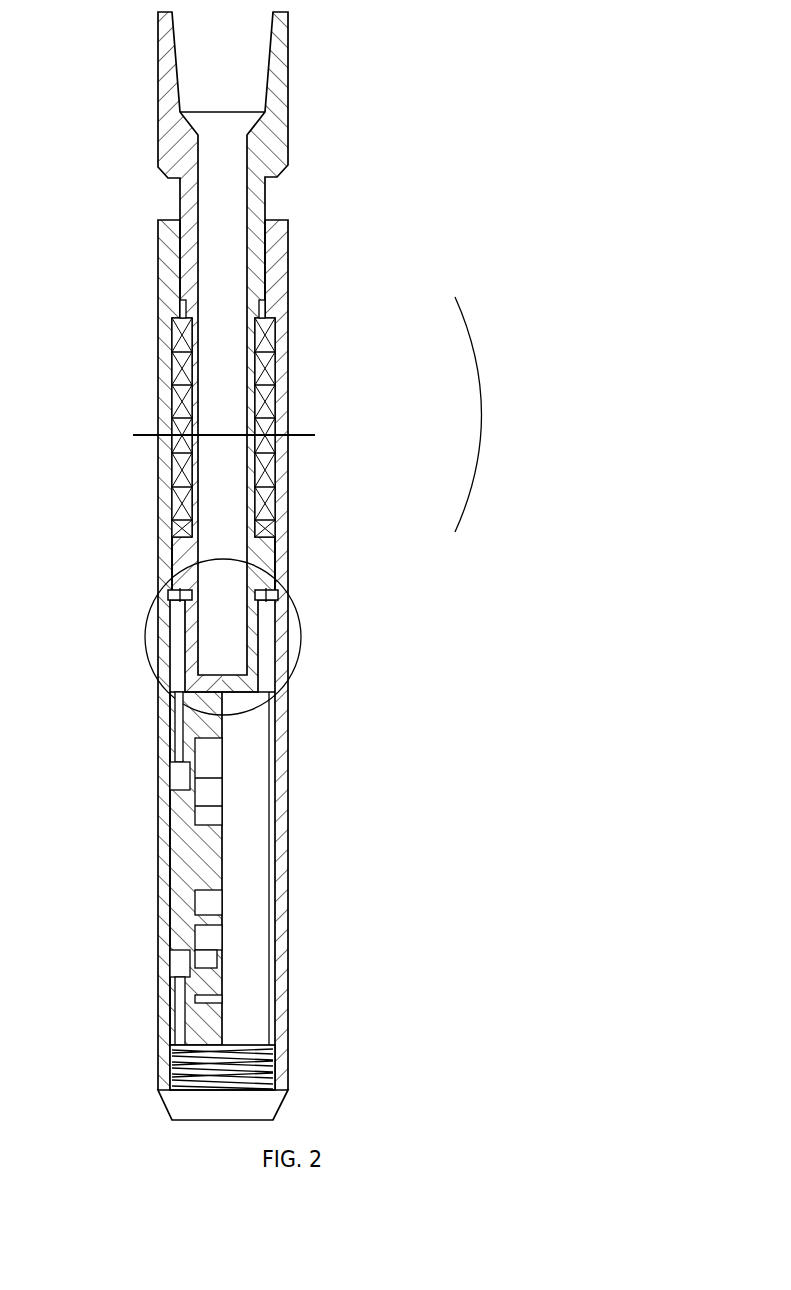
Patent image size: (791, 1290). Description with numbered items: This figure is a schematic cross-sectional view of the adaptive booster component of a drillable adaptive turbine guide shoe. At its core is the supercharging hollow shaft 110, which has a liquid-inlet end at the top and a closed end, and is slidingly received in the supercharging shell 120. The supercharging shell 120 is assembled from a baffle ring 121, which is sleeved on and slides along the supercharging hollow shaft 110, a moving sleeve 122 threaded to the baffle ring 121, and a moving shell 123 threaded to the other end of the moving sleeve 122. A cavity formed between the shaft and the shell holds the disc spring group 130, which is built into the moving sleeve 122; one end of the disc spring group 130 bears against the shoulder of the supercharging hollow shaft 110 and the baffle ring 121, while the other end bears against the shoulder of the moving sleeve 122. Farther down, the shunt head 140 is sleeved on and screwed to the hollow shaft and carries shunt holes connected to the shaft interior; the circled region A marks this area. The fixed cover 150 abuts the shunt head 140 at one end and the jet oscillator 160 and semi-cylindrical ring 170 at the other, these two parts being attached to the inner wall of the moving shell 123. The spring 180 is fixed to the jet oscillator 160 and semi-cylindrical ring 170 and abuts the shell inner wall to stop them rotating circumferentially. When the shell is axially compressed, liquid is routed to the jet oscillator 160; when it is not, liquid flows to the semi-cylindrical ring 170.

The supercharging hollow shaft 110 is at (282, 173).
The supercharging shell 120 is at (462, 438).
The baffle ring 121 is at (288, 270).
The moving sleeve 122 is at (288, 408).
The moving shell 123 is at (272, 592).
The disc spring group 130 is at (158, 340).
The shunt head 140 is at (168, 596).
The fixed cover 150 is at (288, 707).
The jet oscillator 160 is at (170, 850).
The semi-cylindrical ring 170 is at (288, 843).
The spring 180 is at (285, 1090).
The enlarged detail region A is at (157, 675).